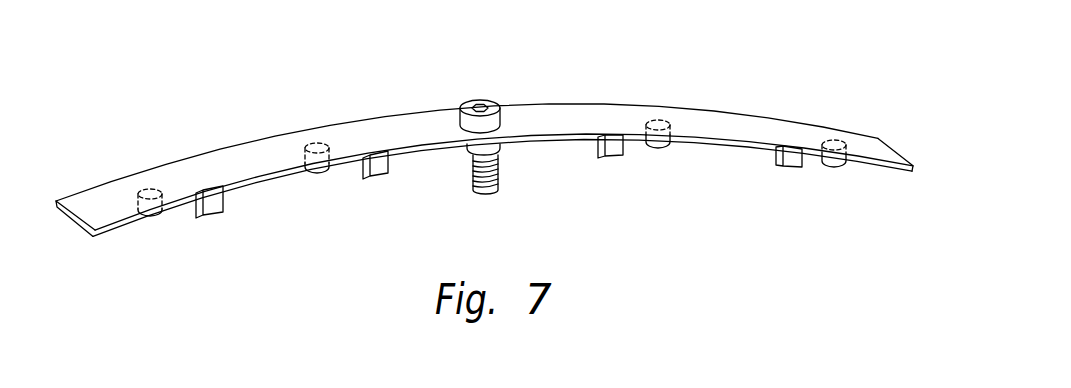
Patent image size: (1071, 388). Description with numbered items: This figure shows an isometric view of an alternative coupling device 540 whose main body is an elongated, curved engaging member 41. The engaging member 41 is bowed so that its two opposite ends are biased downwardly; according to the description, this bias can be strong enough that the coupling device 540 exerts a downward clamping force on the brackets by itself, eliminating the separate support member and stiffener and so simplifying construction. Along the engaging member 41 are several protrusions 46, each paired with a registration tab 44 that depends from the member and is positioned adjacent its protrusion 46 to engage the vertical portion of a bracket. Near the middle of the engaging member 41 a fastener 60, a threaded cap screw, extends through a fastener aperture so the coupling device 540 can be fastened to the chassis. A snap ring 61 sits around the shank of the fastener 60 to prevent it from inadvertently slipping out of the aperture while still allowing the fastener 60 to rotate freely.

The coupling device 540 is at (673, 83).
The engaging member 41 is at (72, 218).
The registration tabs 44 is at (212, 215).
The protrusions 46 is at (155, 211).
The fastener 60 is at (478, 100).
The snap ring 61 is at (500, 148).